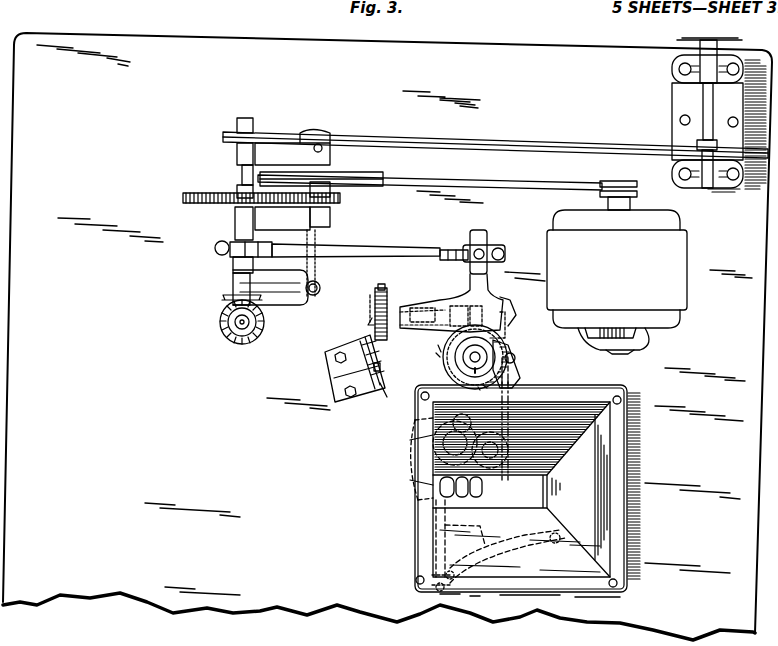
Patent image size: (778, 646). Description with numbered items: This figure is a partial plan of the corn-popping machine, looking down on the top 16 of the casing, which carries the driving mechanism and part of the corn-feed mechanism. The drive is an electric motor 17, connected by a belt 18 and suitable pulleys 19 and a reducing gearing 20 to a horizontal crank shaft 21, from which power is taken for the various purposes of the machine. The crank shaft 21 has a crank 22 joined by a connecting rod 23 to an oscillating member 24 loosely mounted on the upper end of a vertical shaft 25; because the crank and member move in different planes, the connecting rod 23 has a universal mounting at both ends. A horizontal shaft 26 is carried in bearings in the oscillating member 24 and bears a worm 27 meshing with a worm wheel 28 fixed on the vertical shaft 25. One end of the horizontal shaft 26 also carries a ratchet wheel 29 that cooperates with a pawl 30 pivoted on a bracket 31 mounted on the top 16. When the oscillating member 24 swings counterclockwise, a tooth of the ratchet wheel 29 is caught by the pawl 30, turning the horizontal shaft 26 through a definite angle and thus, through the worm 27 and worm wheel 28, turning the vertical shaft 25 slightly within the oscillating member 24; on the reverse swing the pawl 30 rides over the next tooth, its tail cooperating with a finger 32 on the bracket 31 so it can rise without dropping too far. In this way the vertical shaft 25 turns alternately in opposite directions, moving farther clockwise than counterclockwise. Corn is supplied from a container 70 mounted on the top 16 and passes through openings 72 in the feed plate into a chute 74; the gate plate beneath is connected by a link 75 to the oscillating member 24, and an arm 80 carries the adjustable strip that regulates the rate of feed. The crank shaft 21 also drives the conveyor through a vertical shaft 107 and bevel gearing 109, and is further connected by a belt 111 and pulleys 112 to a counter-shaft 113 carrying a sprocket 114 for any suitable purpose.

The top 16 is at (156, 598).
The electric motor 17 is at (680, 270).
The belt 18 is at (482, 184).
The pulleys 19 is at (385, 182).
The reducing gearing 20 is at (185, 203).
The crank shaft 21 is at (237, 177).
The crank 22 is at (233, 258).
The connecting rod 23 is at (400, 250).
The oscillating member 24 is at (470, 290).
The vertical shaft 25 is at (480, 353).
The horizontal shaft 26 is at (375, 313).
The worm 27 is at (502, 296).
The worm wheel 28 is at (444, 365).
The ratchet wheel 29 is at (380, 288).
The pawl 30 is at (365, 334).
The bracket 31 is at (346, 398).
The finger 32 is at (382, 395).
The container 70 is at (600, 470).
The openings 72 is at (445, 505).
The chute 74 is at (410, 462).
The link 75 is at (518, 388).
The arm 80 is at (448, 546).
The vertical shaft 107 is at (242, 328).
The bevel gearing 109 is at (221, 313).
The belt 111 is at (547, 146).
The pulleys 112 is at (262, 133).
The counter-shaft 113 is at (705, 97).
The sprocket 114 is at (680, 40).